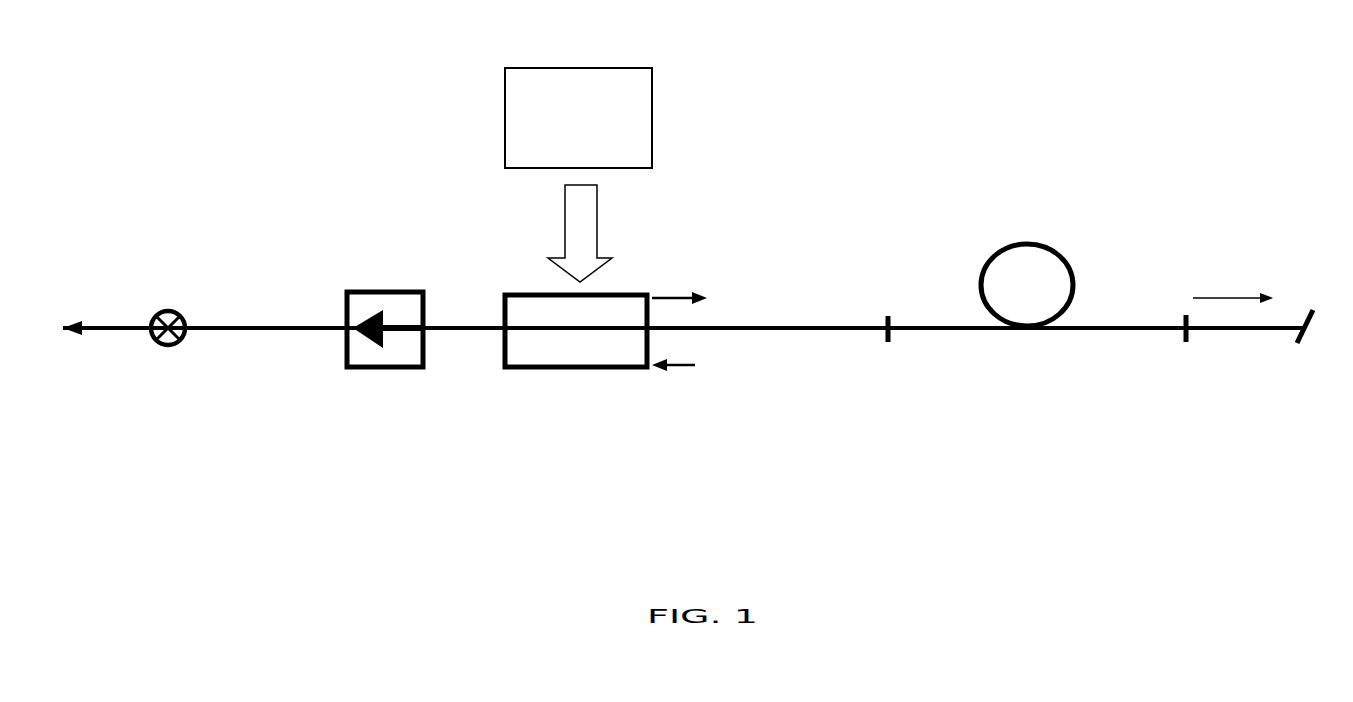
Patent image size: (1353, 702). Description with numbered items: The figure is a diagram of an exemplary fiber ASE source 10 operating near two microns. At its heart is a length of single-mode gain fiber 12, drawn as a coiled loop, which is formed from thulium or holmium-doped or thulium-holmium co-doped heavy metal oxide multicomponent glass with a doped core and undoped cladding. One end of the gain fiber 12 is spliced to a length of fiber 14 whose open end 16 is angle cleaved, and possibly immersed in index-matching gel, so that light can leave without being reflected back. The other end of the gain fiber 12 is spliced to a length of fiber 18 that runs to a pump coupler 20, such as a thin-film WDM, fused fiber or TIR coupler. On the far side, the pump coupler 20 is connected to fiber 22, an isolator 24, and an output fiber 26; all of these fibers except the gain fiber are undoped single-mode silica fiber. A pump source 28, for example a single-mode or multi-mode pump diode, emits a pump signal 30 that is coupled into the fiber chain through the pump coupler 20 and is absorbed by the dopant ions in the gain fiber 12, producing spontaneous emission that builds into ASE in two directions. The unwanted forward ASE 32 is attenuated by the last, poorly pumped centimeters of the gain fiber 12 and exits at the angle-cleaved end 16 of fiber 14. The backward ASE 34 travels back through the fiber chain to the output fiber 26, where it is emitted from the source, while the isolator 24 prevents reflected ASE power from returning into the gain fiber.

The fiber ASE source 10 is at (372, 154).
The single-mode gain fiber 12 is at (1037, 243).
The fiber 14 is at (1242, 330).
The open end 16 is at (1307, 332).
The fiber 18 is at (797, 320).
The pump coupler 20 is at (583, 368).
The fiber 22 is at (467, 332).
The isolator 24 is at (380, 367).
The output fiber 26 is at (252, 326).
The pump source 28 is at (653, 110).
The pump signal 30 is at (598, 237).
The forward ASE 32 is at (1223, 298).
The backward ASE 34 is at (683, 368).